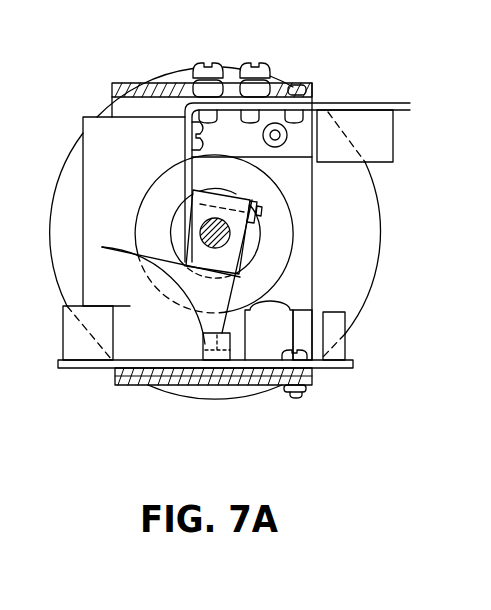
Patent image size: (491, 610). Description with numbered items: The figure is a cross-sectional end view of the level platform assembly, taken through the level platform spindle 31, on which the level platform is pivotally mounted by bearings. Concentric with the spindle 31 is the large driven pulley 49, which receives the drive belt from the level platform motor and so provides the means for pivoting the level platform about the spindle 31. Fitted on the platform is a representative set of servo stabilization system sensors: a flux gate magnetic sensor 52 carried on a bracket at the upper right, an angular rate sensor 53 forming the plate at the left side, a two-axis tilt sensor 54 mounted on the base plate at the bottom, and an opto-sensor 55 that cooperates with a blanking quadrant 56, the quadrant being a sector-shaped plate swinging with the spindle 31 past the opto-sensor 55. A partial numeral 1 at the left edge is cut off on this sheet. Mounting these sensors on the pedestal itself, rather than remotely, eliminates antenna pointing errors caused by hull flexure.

The partial numeral (cut off) 1 is at (7, 182).
The level platform spindle 31 is at (197, 229).
The driven pulley 49 is at (234, 233).
The flux gate magnetic sensor 52 is at (365, 128).
The angular rate sensor 53 is at (98, 130).
The two-axis tilt sensor 54 is at (268, 343).
The opto-sensor 55 is at (203, 353).
The blanking quadrant 56 is at (113, 277).